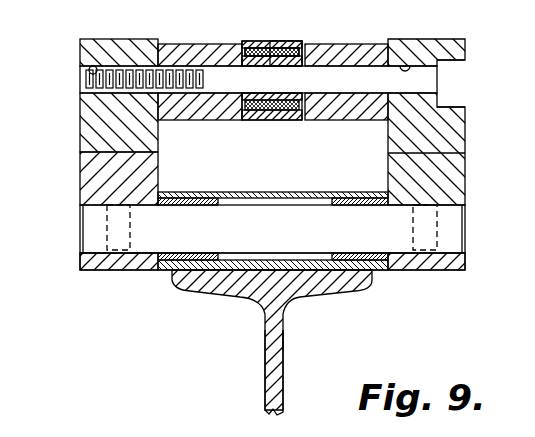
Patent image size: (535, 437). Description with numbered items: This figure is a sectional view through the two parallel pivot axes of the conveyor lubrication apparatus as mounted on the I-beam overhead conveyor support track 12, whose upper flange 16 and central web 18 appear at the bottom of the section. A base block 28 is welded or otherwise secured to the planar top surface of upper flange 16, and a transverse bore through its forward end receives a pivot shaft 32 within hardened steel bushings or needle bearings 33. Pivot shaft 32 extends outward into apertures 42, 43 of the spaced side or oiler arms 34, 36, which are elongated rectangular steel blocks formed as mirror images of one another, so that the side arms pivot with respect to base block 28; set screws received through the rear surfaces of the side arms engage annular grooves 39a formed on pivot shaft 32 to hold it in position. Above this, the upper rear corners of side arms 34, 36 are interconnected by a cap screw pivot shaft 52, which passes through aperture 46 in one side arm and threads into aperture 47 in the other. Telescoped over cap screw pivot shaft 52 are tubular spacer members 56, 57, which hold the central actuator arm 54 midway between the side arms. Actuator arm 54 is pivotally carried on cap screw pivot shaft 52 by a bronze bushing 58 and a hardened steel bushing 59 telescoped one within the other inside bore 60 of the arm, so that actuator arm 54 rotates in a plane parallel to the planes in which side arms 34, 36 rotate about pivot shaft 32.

The overhead conveyor support track 12 is at (300, 336).
The upper flange 16 is at (310, 284).
The central web 18 is at (266, 336).
The base block 28 is at (310, 176).
The pivot shaft 32 is at (268, 242).
The bushings 33 is at (200, 196).
The side arm 34 is at (100, 120).
The side arm 36 is at (450, 130).
The annular grooves 39a is at (83, 231).
The transverse aperture 42 is at (142, 262).
The transverse aperture 43 is at (410, 262).
The transverse aperture 46 is at (408, 68).
The threaded aperture 47 is at (93, 66).
The cap screw pivot shaft 52 is at (327, 75).
The actuator arm 54 is at (258, 41).
The tubular spacer member 56 is at (172, 48).
The tubular spacer member 57 is at (368, 49).
The bronze bushing 58 is at (246, 44).
The hardened steel bushing 59 is at (268, 120).
The bore 60 is at (286, 43).